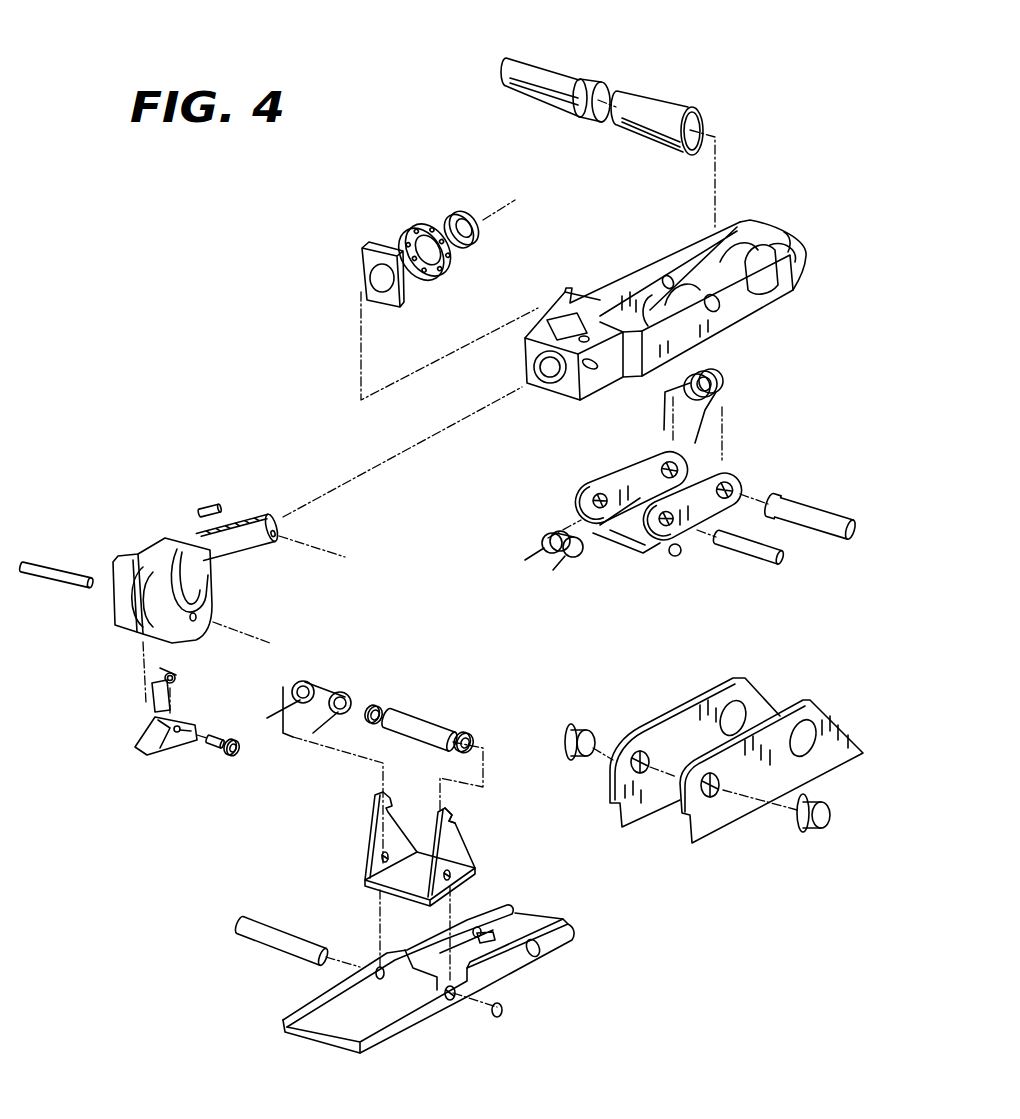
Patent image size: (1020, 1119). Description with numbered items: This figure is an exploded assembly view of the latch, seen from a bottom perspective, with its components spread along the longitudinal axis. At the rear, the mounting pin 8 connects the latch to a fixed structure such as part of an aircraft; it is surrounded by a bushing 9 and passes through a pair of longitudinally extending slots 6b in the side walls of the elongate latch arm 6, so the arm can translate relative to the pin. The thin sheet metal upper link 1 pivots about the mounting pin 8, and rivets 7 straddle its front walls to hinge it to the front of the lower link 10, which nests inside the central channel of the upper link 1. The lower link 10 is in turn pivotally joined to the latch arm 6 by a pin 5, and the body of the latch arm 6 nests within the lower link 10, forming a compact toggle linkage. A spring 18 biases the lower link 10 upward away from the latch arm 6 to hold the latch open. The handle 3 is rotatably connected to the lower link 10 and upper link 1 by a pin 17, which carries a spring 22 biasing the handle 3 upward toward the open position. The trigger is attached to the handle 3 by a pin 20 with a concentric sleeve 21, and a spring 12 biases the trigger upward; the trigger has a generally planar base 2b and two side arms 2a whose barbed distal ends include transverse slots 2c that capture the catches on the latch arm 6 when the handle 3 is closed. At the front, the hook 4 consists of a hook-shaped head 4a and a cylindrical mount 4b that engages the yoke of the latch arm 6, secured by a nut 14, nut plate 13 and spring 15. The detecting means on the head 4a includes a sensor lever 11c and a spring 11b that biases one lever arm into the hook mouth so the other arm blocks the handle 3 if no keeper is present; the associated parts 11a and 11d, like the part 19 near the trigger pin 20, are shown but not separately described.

The upper link 1 is at (790, 772).
The side arms 2a is at (465, 862).
The base 2b is at (403, 877).
The transverse slot 2c is at (453, 823).
The handle 3 is at (507, 967).
The hook 4 is at (127, 623).
The hook-shaped head 4a is at (210, 590).
The cylindrical mount 4b is at (200, 543).
The pin 5 is at (820, 507).
The latch arm 6 is at (727, 230).
The slots 6b is at (748, 290).
The rivets 7 is at (822, 823).
The mounting pin 8 is at (550, 72).
The bushing 9 is at (590, 75).
The lower link 10 is at (638, 462).
The pin 11a is at (42, 567).
The spring 11b is at (147, 710).
The sensor lever 11c is at (140, 757).
The ring 11d is at (230, 760).
The spring 12 is at (303, 707).
The nut plate 13 is at (365, 277).
The nut 14 is at (418, 232).
The spring 15 is at (462, 208).
The pin 17 is at (748, 560).
The spring 18 is at (733, 383).
The ring 19 is at (375, 707).
The pin 20 is at (420, 727).
The sleeve 21 is at (287, 948).
The spring 22 is at (527, 528).